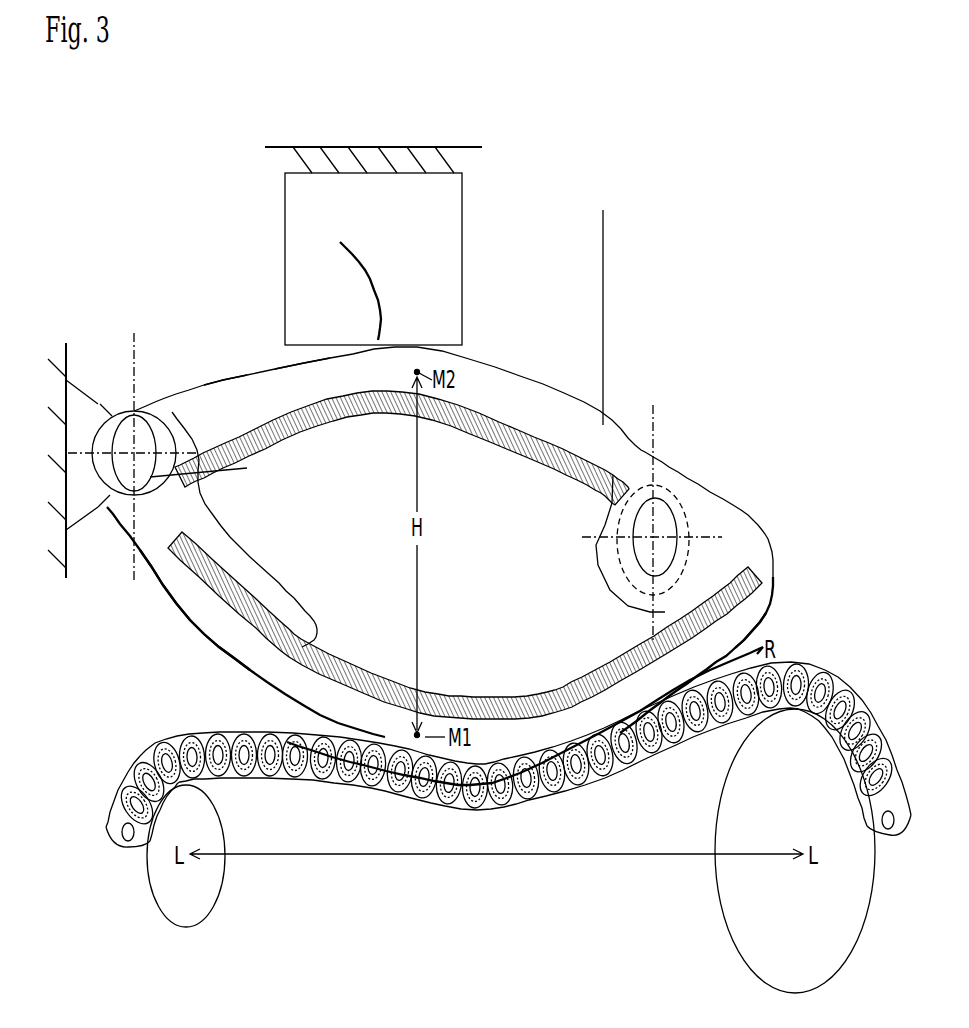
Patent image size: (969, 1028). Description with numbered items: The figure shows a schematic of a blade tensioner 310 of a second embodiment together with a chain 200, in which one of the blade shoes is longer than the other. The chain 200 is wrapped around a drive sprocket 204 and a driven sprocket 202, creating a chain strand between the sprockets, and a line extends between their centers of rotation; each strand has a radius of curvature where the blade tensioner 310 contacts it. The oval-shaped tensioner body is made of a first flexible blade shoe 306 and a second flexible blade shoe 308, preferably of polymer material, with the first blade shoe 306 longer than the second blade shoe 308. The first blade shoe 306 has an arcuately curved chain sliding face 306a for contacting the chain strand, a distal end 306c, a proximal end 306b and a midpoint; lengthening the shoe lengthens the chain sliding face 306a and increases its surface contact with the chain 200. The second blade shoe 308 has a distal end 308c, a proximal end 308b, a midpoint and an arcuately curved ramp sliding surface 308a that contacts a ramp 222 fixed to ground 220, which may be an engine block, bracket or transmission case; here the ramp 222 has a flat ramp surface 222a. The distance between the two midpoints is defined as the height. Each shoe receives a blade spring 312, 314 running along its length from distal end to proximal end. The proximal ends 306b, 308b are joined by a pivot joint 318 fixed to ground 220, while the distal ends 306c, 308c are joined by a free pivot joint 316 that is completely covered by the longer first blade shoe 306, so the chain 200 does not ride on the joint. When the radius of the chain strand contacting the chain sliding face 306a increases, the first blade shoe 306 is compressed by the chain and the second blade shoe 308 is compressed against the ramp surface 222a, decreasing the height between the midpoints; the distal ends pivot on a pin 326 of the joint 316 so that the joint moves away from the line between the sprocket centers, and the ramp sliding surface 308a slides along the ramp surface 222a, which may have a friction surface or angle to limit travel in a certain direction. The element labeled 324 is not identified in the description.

The chain 200 is at (458, 806).
The driven sprocket 202 is at (172, 835).
The drive sprocket 204 is at (770, 800).
The ground 220 is at (362, 150).
The ramp 222 is at (372, 216).
The ramp surface 222a is at (340, 283).
The first blade shoe 306 is at (512, 745).
The chain sliding face 306a is at (232, 650).
The proximal end of first blade shoe 306b is at (200, 608).
The distal end of first blade shoe 306c is at (770, 618).
The second blade shoe 308 is at (511, 392).
The ramp sliding surface 308a is at (283, 363).
The proximal end of second blade shoe 308b is at (237, 397).
The distal end of second blade shoe 308c is at (603, 300).
The blade tensioner 310 is at (88, 113).
The blade spring 312 is at (575, 680).
The blade spring 314 is at (328, 425).
The free pivot joint 316 is at (668, 502).
The pivot joint 318 is at (113, 497).
The first pivot axis 324 is at (122, 415).
The pin 326 is at (648, 547).